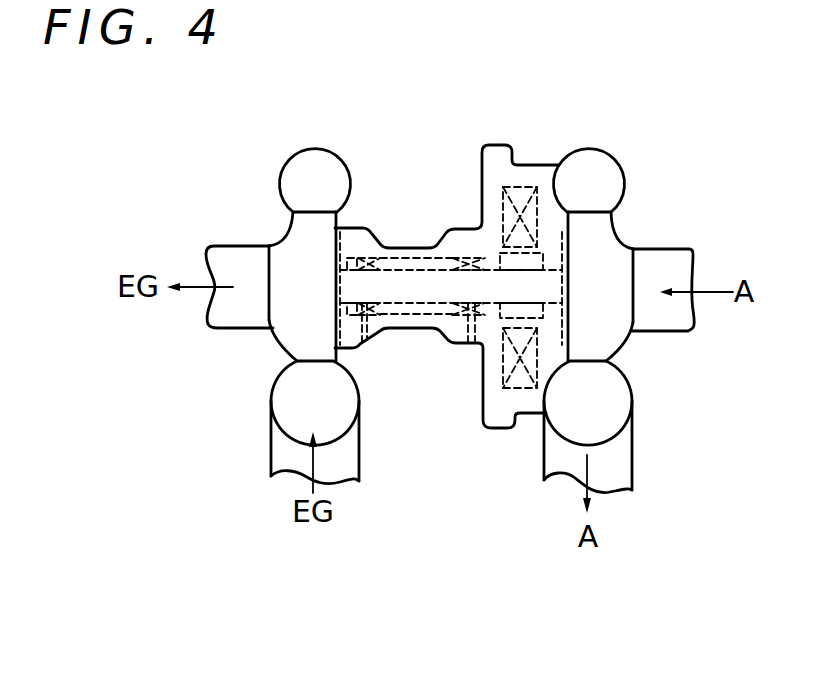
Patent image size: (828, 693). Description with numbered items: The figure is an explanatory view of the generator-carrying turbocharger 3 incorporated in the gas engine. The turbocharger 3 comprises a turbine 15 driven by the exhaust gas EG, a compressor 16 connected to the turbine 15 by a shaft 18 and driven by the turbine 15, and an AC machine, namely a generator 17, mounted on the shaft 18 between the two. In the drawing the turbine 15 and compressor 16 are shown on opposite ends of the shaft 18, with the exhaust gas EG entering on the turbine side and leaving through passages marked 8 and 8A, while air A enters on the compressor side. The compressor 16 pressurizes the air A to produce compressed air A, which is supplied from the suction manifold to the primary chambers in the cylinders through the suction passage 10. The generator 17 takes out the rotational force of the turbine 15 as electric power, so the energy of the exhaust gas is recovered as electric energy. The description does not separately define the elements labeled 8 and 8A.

The turbocharger 3 is at (421, 183).
The turbine 15 is at (292, 248).
The compressor 16 is at (605, 255).
The generator 17 is at (519, 215).
The shaft 18 is at (417, 297).
The first connecting rod 8 is at (292, 455).
The input rod 8A is at (235, 310).
The suction passage 10 is at (618, 468).